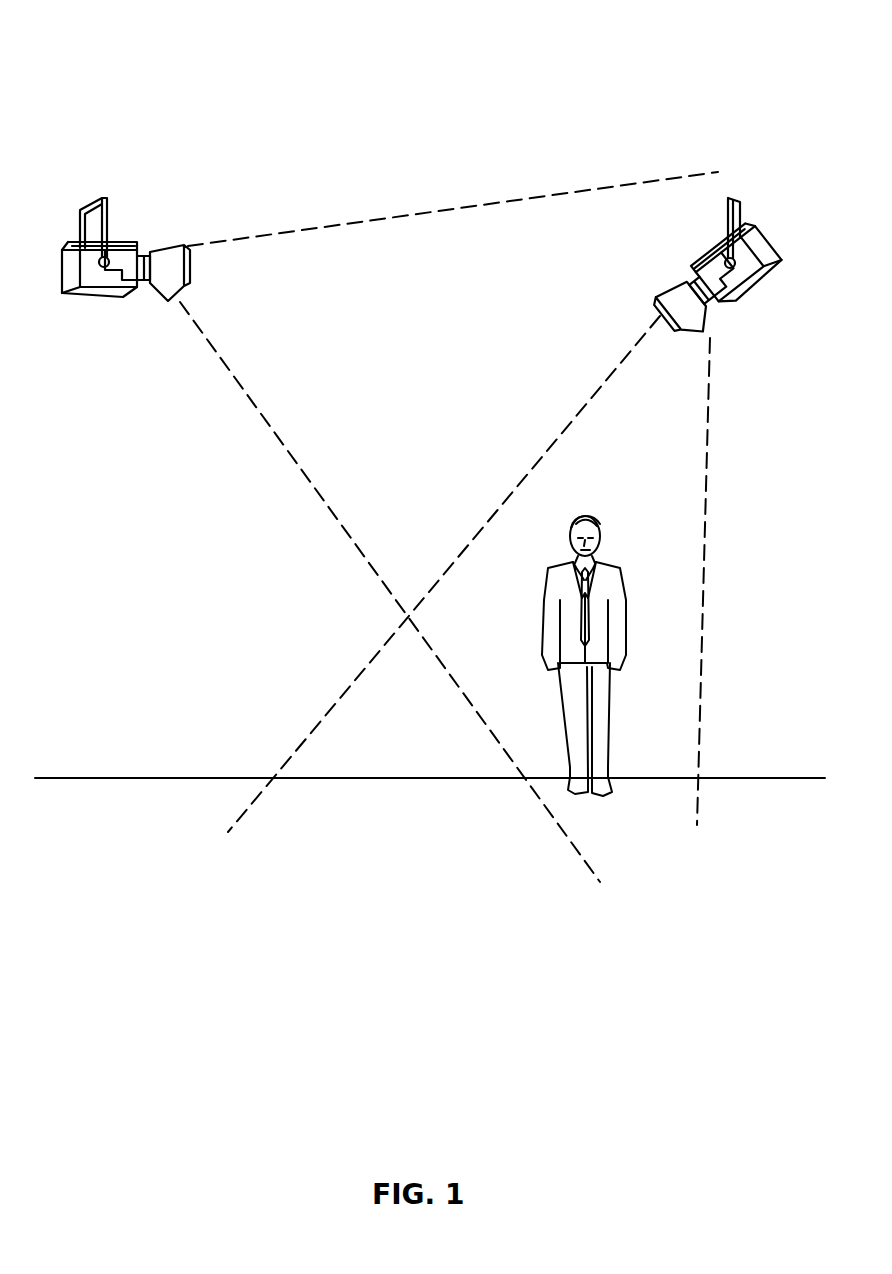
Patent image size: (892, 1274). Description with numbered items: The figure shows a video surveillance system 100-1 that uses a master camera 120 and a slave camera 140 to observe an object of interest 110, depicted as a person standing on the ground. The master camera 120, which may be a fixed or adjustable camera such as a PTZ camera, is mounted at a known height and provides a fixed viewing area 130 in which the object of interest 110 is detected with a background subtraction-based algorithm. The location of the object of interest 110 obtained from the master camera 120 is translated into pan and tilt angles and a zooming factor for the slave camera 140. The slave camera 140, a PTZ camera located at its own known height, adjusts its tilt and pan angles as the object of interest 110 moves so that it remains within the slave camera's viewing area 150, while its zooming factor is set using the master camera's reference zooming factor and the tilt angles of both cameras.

The surveillance system 100-1 is at (647, 108).
The object of interest 110 is at (626, 578).
The master camera 120 is at (148, 248).
The fixed viewing area 130 is at (268, 430).
The slave camera 140 is at (772, 240).
The viewing area 150 is at (706, 468).